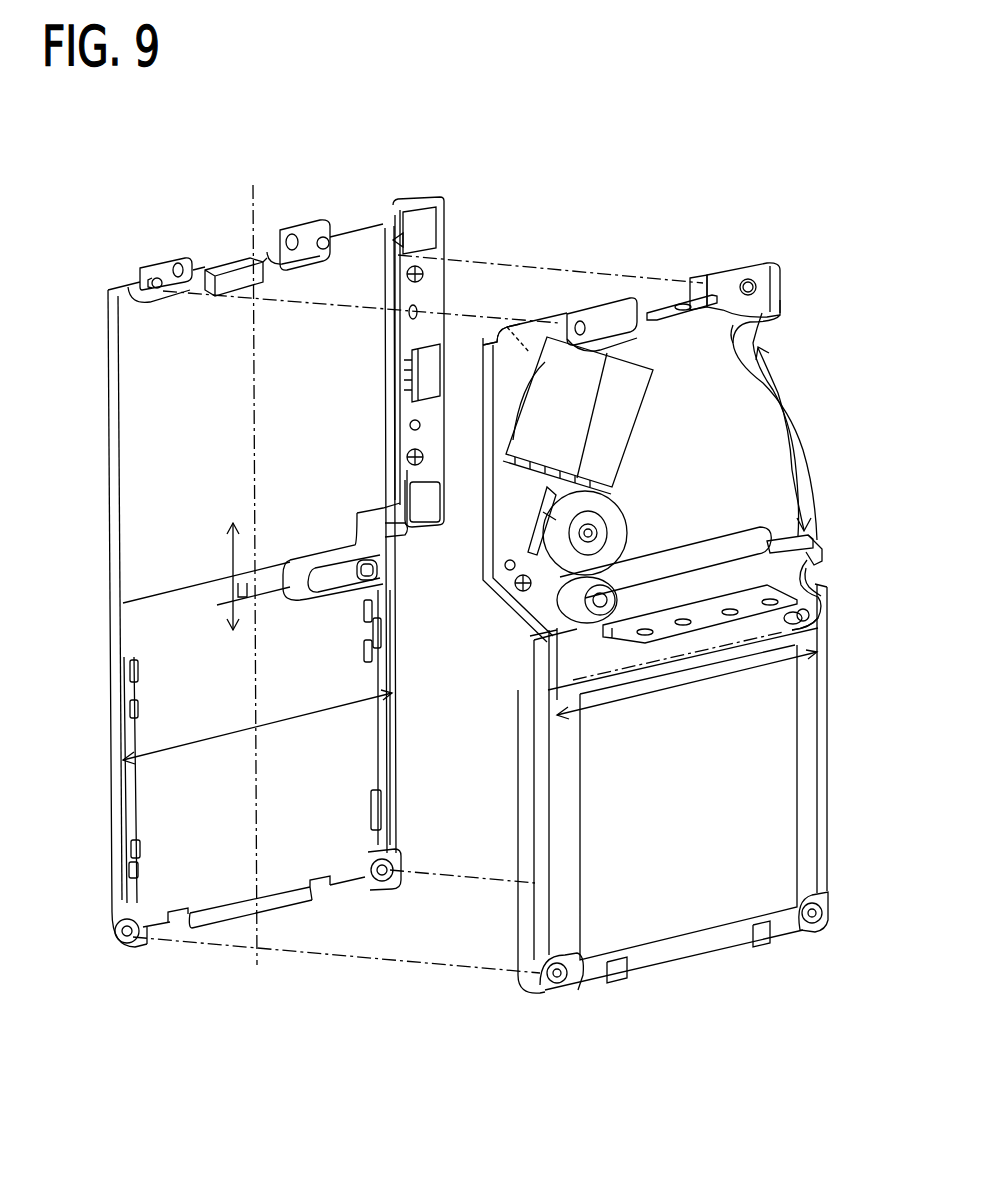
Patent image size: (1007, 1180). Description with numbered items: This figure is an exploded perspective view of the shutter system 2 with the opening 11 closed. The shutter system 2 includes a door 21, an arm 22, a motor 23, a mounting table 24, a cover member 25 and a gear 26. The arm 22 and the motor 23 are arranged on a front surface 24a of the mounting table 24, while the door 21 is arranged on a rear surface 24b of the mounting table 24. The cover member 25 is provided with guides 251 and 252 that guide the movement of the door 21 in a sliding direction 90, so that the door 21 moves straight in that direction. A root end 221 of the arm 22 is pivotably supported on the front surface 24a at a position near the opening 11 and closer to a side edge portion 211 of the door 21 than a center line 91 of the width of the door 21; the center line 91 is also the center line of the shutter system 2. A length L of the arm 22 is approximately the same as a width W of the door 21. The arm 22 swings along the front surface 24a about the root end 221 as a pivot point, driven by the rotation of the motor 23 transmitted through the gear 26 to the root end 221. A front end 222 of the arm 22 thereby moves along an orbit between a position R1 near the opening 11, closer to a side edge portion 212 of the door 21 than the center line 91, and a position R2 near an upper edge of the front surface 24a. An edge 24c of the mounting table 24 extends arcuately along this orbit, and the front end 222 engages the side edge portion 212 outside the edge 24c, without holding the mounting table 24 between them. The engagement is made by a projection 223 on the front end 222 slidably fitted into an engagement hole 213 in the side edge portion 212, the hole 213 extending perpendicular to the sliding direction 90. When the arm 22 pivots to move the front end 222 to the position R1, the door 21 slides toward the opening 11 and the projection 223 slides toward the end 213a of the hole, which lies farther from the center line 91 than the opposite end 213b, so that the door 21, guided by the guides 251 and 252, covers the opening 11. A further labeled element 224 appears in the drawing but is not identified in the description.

The shutter system 2 is at (743, 243).
The opening 11 is at (517, 887).
The door 21 is at (323, 848).
The arm 22 is at (717, 572).
The motor 23 is at (563, 360).
The mounting table 24 is at (690, 370).
The front surface 24a is at (740, 437).
The rear surface 24b is at (530, 357).
The edge 24c is at (773, 400).
The cover member 25 is at (148, 482).
The gear 26 is at (550, 520).
The sliding direction 90 is at (229, 554).
The center line 91 is at (256, 200).
The side edge portion 211 is at (124, 715).
The side edge portion 212 is at (380, 650).
The engagement hole 213 is at (320, 573).
The end 213a is at (385, 571).
The end 213b is at (299, 600).
The root end 221 is at (563, 607).
The front end 222 is at (792, 583).
The projection 223 is at (787, 618).
The tab 224 is at (790, 538).
The guide 251 is at (112, 522).
The guide 252 is at (384, 397).
The position R1 is at (793, 627).
The position R2 is at (748, 334).
The length L is at (687, 686).
The width W is at (257, 729).